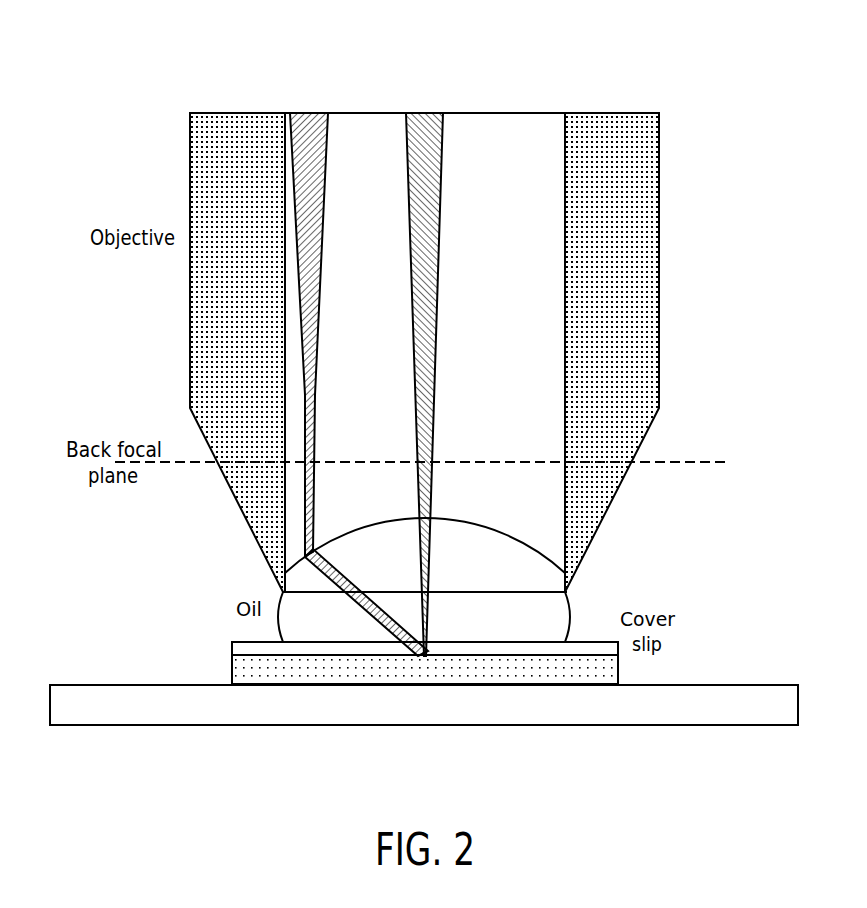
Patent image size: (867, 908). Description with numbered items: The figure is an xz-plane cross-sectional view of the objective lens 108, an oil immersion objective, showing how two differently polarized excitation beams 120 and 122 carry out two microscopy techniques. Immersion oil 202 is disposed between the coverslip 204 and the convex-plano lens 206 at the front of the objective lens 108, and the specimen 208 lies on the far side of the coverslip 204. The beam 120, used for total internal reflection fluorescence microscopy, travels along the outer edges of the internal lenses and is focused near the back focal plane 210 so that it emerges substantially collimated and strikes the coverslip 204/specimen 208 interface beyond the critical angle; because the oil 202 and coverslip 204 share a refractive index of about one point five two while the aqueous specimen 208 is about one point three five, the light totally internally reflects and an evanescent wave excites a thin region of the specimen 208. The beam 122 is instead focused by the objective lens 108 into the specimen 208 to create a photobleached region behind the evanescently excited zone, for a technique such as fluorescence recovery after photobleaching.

The objective lens 108 is at (648, 213).
The excitation beam 120 is at (310, 125).
The excitation beam 122 is at (423, 125).
The immersion oil 202 is at (513, 629).
The coverslip 204 is at (590, 648).
The convex-plano lens 206 is at (513, 584).
The specimen 208 is at (243, 670).
The back focal plane 210 is at (712, 460).